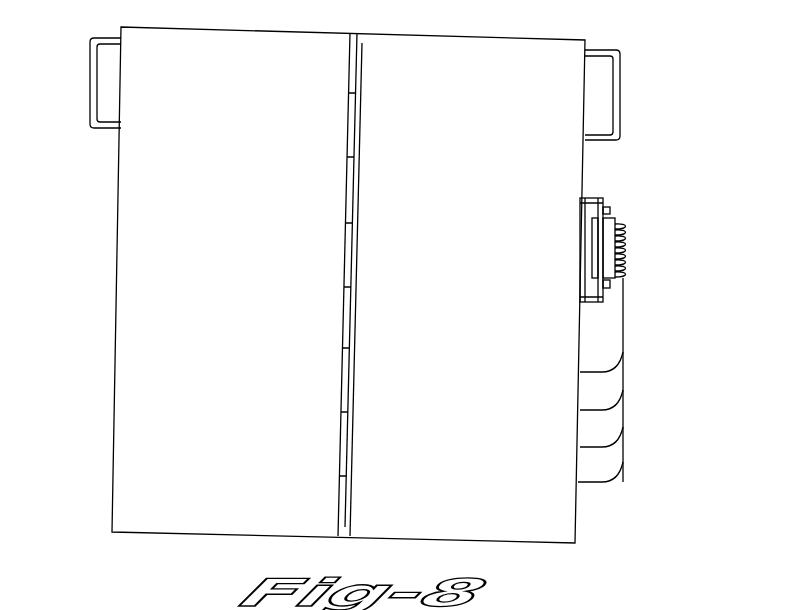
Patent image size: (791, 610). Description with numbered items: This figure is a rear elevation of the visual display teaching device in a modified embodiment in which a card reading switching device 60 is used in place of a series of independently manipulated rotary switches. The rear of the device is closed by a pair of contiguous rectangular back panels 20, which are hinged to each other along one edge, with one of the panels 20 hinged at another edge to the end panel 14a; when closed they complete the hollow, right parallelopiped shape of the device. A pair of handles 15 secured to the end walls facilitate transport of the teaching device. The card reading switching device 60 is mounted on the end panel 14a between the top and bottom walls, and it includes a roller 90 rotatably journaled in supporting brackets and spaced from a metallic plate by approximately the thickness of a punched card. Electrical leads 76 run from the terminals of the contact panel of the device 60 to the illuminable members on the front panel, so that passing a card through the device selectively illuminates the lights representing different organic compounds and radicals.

The end panel 14a is at (577, 512).
The handle 15 is at (90, 52).
The back panel 20 is at (234, 253).
The card reading switching device 60 is at (608, 198).
The electrical leads 76 is at (625, 333).
The roller 90 is at (585, 248).